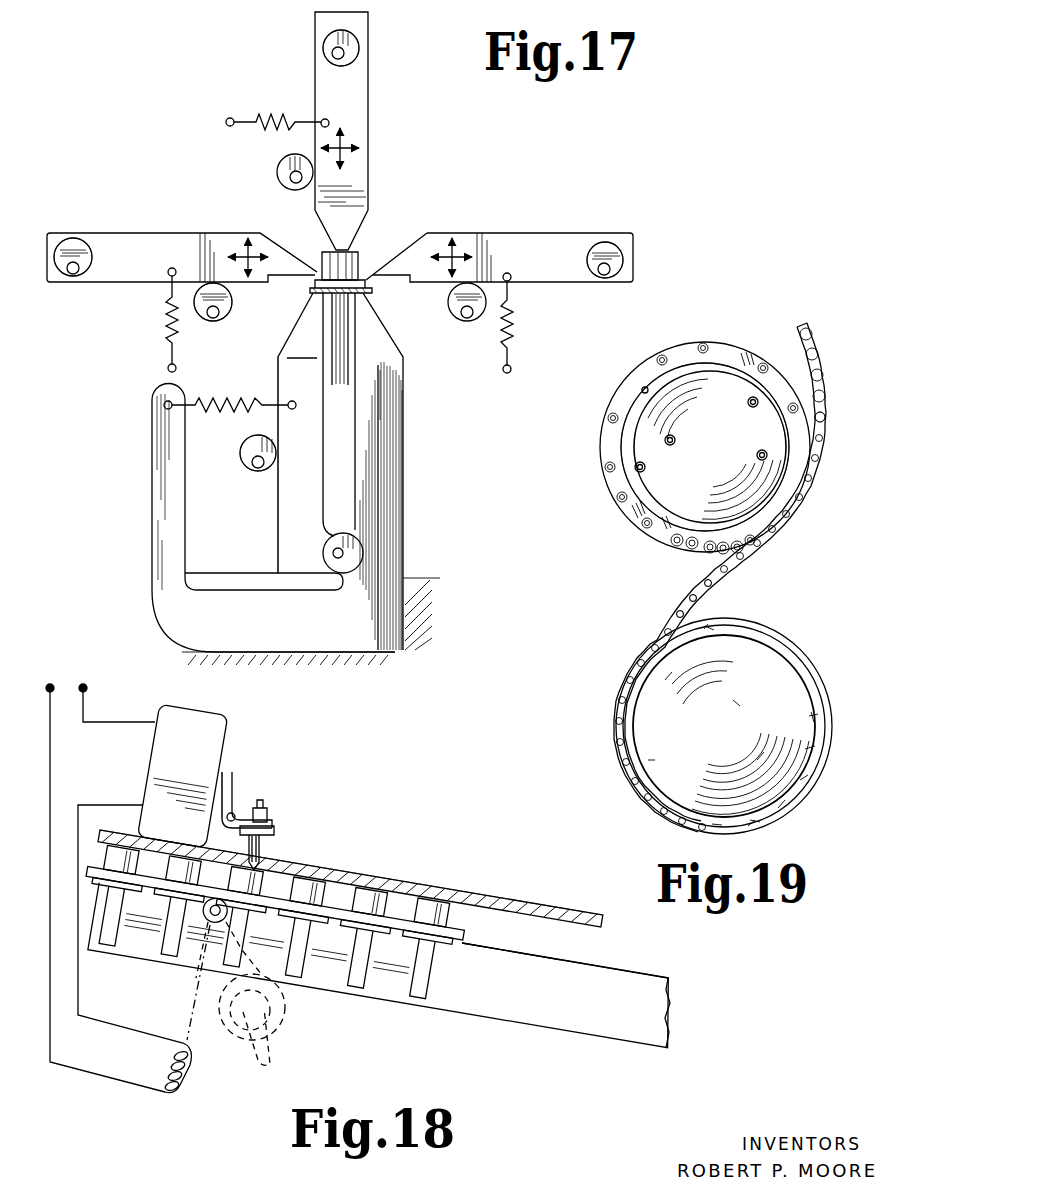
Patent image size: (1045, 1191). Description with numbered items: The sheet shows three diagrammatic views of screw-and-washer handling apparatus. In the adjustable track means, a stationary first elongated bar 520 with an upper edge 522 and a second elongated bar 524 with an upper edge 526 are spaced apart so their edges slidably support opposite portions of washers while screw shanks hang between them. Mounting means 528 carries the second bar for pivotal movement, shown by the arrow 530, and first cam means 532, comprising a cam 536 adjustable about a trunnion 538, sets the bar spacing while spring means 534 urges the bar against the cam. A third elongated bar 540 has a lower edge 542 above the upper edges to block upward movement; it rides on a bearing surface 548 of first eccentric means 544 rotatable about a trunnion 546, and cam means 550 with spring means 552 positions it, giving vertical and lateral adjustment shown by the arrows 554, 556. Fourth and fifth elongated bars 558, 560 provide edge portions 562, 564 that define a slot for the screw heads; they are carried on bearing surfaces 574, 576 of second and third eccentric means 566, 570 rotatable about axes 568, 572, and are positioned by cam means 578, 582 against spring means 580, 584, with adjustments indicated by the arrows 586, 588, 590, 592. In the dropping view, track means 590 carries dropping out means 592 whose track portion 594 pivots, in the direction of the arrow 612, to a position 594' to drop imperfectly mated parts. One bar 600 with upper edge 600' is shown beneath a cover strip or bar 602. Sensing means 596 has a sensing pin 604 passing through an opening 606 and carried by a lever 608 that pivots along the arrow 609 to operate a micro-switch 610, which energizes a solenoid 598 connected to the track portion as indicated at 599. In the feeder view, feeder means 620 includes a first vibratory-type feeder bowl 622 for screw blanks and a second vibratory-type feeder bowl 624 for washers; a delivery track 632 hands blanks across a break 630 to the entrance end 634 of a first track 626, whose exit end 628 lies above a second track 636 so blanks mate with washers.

In FIG. 17, the first elongated bar 520 is at (387, 408).
In FIG. 17, the upper edge of first bar 522 is at (372, 296).
In FIG. 17, the second elongated bar 524 is at (300, 385).
In FIG. 17, the upper edge of second bar 526 is at (315, 288).
In FIG. 17, the mounting means 528 is at (370, 538).
In FIG. 17, the arrow 530 is at (270, 323).
In FIG. 17, the first cam means 532 is at (238, 457).
In FIG. 17, the spring means 534 is at (222, 410).
In FIG. 17, the cam 536 is at (255, 470).
In FIG. 17, the trunnion 538 is at (262, 469).
In FIG. 17, the third elongated bar 540 is at (356, 92).
In FIG. 17, the lower edge of third bar 542 is at (354, 258).
In FIG. 17, the first eccentric means 544 is at (360, 31).
In FIG. 17, the trunnion 546 is at (344, 53).
In FIG. 17, the bearing surface 548 is at (323, 32).
In FIG. 17, the cam means 550 is at (283, 165).
In FIG. 17, the spring means 552 is at (278, 117).
In FIG. 17, the arrow 554 is at (348, 141).
In FIG. 17, the arrow 556 is at (350, 158).
In FIG. 17, the fourth elongated bar 558 is at (150, 240).
In FIG. 17, the fifth elongated bar 560 is at (540, 242).
In FIG. 17, the edge portion of fourth bar 562 is at (322, 266).
In FIG. 17, the edge portion of fifth bar 564 is at (368, 262).
In FIG. 17, the second eccentric means 566 is at (70, 242).
In FIG. 17, the axis 568 is at (79, 275).
In FIG. 17, the third eccentric means 570 is at (625, 246).
In FIG. 17, the axis 572 is at (611, 273).
In FIG. 17, the bearing surface 574 is at (92, 255).
In FIG. 17, the bearing surface 576 is at (608, 243).
In FIG. 17, the cam means 578 is at (205, 326).
In FIG. 17, the spring means 580 is at (167, 304).
In FIG. 17, the cam means 582 is at (459, 323).
In FIG. 17, the spring means 584 is at (514, 318).
In FIG. 17, the arrow 586 is at (262, 252).
In FIG. 17, the arrow 588 is at (246, 245).
In FIG. 17, the arrow / track means 590 is at (458, 250).
In FIG. 18, the arrow / track means 590 is at (452, 868).
In FIG. 17, the arrow / dropping out means 592 is at (372, 289).
In FIG. 18, the arrow / dropping out means 592 is at (216, 1082).
In FIG. 18, the track portion 594 is at (376, 963).
In FIG. 18, the drop-out position of track portion 594' is at (269, 993).
In FIG. 18, the sensing means 596 is at (248, 789).
In FIG. 18, the electrically-operated means (solenoid) 598 is at (168, 1098).
In FIG. 18, the operative connection 599 is at (188, 1026).
In FIG. 18, the bar 600 is at (581, 992).
In FIG. 18, the upper edge of bar 600' is at (544, 949).
In FIG. 18, the cover strip or bar 602 is at (344, 917).
In FIG. 18, the sensing pin 604 is at (264, 852).
In FIG. 18, the opening 606 is at (265, 858).
In FIG. 18, the lever 608 is at (239, 743).
In FIG. 18, the arrow 609 is at (281, 797).
In FIG. 18, the micro-switch 610 is at (203, 757).
In FIG. 18, the arrow 612 is at (216, 948).
In FIG. 19, the feeder means 620 is at (598, 526).
In FIG. 19, the first vibratory-type feeder bowl 622 is at (826, 669).
In FIG. 19, the second vibratory-type feeder bowl 624 is at (596, 420).
In FIG. 19, the first track 626 is at (776, 534).
In FIG. 19, the exit end of first track 628 is at (818, 410).
In FIG. 19, the break 630 is at (693, 574).
In FIG. 19, the delivery track 632 is at (690, 584).
In FIG. 19, the entrance end of first track 634 is at (713, 591).
In FIG. 19, the second track 636 is at (816, 337).